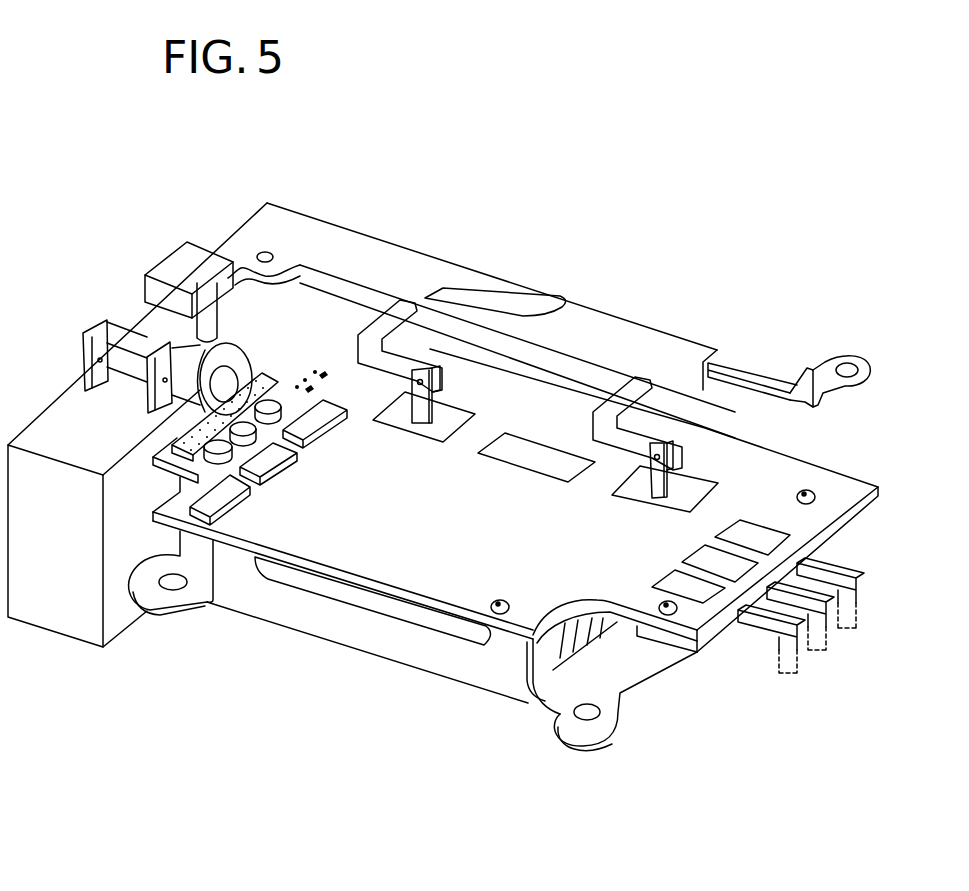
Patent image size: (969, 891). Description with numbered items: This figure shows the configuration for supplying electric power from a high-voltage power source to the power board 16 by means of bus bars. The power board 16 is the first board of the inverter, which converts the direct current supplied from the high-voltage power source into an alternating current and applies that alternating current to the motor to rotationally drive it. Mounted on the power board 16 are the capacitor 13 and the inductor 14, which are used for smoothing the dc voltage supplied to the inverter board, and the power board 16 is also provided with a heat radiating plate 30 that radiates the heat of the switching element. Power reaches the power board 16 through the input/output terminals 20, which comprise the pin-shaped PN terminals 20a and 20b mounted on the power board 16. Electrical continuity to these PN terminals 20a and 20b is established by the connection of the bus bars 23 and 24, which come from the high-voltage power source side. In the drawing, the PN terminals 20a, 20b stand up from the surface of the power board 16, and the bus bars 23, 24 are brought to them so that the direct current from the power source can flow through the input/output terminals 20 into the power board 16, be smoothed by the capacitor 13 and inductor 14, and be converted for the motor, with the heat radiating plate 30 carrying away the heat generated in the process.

The capacitor 13 is at (60, 435).
The inductor 14 is at (240, 364).
The power board 16 is at (833, 495).
The input/output terminals 20 is at (647, 323).
The PN terminal 20a is at (670, 410).
The PN terminal 20b is at (429, 370).
The bus bar 23 is at (658, 442).
The bus bar 24 is at (403, 355).
The heat radiating plate 30 is at (653, 670).